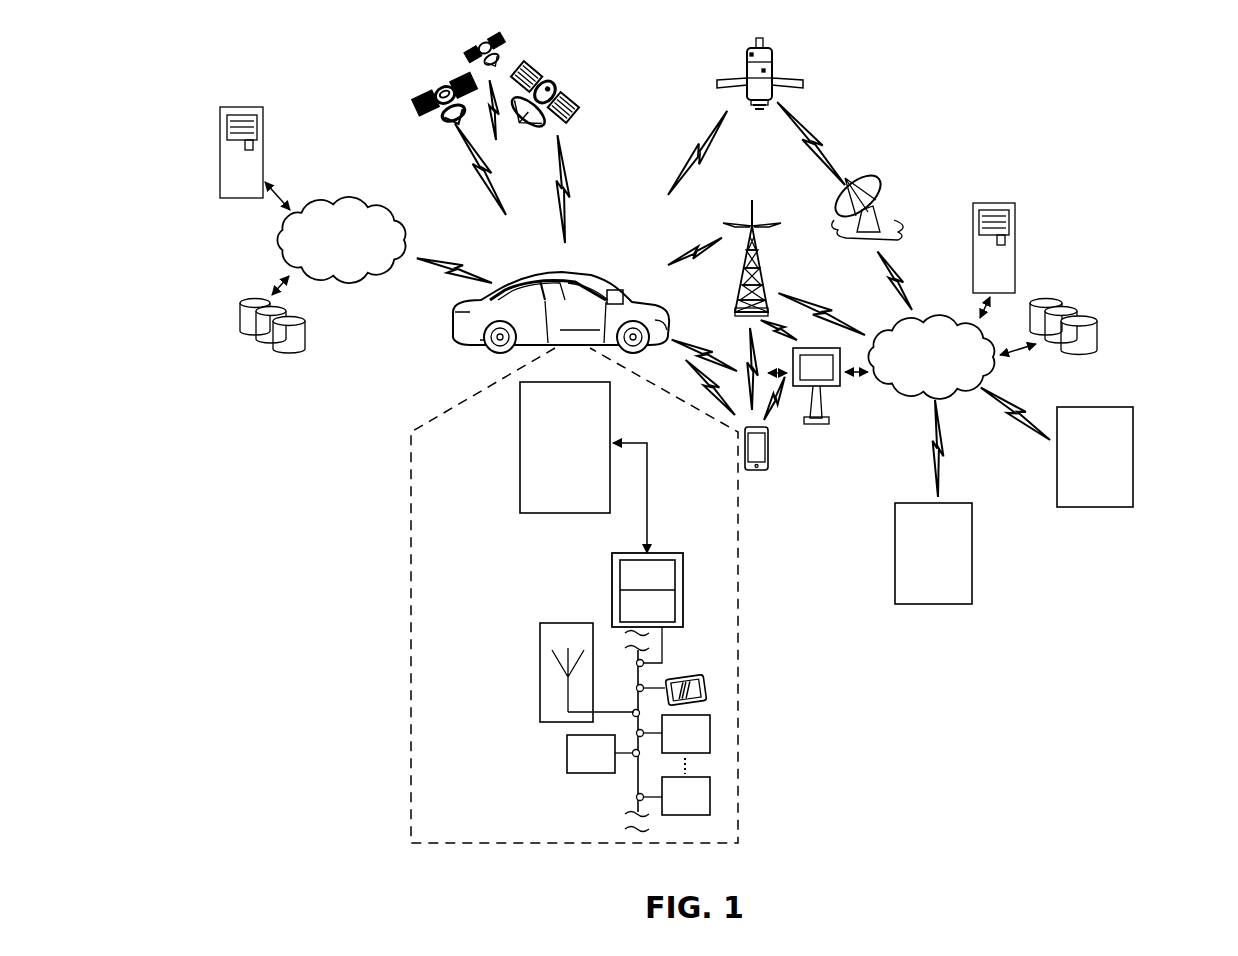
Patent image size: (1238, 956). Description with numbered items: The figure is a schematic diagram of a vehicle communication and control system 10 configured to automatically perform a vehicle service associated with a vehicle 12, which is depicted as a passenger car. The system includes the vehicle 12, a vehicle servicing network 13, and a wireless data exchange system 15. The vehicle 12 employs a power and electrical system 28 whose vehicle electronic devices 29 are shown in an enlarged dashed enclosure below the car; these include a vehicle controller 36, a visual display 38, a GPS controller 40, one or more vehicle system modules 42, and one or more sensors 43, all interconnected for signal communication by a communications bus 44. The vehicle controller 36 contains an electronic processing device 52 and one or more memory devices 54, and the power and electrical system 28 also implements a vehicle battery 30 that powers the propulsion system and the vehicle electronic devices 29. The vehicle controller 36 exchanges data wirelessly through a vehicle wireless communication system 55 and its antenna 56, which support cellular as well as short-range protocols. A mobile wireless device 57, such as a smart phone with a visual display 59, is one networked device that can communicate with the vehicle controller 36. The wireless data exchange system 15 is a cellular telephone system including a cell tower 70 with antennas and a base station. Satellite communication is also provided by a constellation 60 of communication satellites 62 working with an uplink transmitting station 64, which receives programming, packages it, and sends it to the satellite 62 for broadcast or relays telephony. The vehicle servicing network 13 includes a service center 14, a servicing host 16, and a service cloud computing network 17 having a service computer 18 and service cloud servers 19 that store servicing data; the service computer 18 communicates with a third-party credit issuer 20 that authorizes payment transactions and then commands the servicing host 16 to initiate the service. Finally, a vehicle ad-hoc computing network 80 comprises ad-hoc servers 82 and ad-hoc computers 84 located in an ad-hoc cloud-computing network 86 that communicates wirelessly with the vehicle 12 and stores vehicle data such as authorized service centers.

The vehicle communication and control system 10 is at (910, 76).
The vehicle 12 is at (455, 308).
The vehicle servicing network 13 is at (872, 444).
The service center 14 is at (974, 546).
The wireless data exchange system 15 is at (724, 208).
The servicing host 16 is at (826, 390).
The service cloud computing network 17 is at (945, 368).
The service computer 18 is at (1017, 258).
The service cloud server 19 is at (1074, 312).
The third-party credit issuer 20 is at (1134, 428).
The power and electrical system 28 is at (572, 843).
The vehicle electronic devices 29 is at (498, 598).
The vehicle battery 30 is at (520, 433).
The vehicle controller 36 is at (613, 590).
The visual display 38 is at (692, 672).
The global position system (GPS) controller 40 is at (700, 745).
The vehicle system module 42 is at (700, 807).
The sensor 43 is at (620, 290).
The communications bus 44 is at (637, 778).
The electronic processing device 52 is at (661, 588).
The memory device 54 is at (661, 620).
The vehicle wireless communication system 55 is at (553, 670).
The antenna 56 is at (568, 692).
The mobile wireless device 57 is at (785, 474).
The visual display 59 is at (767, 455).
The GNSS satellite constellation 60 is at (590, 102).
The communication satellite 62 is at (570, 64).
The uplink transmitting station 64 is at (885, 218).
The cell tower 70 is at (768, 283).
The vehicle ad-hoc computing network 80 is at (238, 243).
The ad-hoc server 82 is at (284, 308).
The ad-hoc computer 84 is at (263, 126).
The ad-hoc cloud-computing network 86 is at (358, 216).